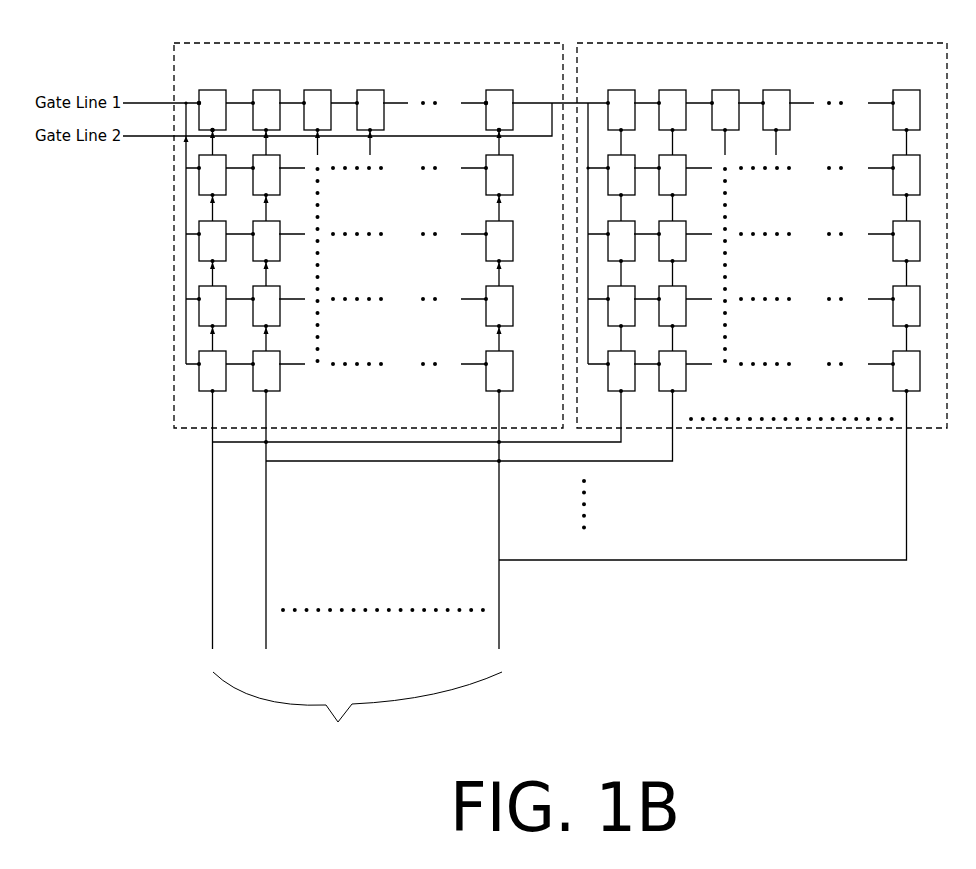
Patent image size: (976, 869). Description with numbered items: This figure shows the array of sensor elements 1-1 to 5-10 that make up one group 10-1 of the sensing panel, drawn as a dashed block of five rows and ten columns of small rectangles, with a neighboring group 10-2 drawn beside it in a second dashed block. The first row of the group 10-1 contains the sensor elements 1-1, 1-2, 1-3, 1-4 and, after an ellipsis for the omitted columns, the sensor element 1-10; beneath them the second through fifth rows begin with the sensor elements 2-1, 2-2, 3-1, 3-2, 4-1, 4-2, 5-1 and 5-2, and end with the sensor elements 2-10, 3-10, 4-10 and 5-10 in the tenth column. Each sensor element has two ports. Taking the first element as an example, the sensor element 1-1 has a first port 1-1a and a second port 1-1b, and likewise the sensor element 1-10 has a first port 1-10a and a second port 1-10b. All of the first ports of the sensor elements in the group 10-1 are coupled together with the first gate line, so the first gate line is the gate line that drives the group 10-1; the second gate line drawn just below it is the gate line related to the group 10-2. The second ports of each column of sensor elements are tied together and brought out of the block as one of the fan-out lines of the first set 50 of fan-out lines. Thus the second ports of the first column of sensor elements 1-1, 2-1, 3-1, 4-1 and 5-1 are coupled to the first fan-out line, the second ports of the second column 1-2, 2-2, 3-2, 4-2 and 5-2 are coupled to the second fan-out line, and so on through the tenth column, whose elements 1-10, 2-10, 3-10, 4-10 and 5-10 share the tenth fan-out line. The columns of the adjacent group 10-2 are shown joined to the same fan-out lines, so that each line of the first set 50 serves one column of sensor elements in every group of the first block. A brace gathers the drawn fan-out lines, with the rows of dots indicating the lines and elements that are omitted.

The group 10-1 is at (440, 43).
The group 10-2 is at (876, 43).
The sensor element 1-1 is at (213, 90).
The sensor element 1-2 is at (266, 90).
The sensor element 1-3 is at (318, 90).
The sensor element 1-4 is at (370, 90).
The sensor element 1-10 is at (499, 90).
The first port 1-1a is at (199, 100).
The second port 1-1b is at (212, 137).
The first port 1-10a is at (486, 100).
The second port 1-10b is at (499, 137).
The sensor element 2-1 is at (213, 155).
The sensor element 2-2 is at (266, 155).
The sensor element 2-10 is at (500, 155).
The sensor element 3-1 is at (213, 221).
The sensor element 3-2 is at (266, 221).
The sensor element 3-10 is at (500, 220).
The sensor element 4-1 is at (213, 286).
The sensor element 4-2 is at (266, 286).
The sensor element 4-10 is at (500, 286).
The sensor element 5-1 is at (213, 351).
The sensor element 5-2 is at (266, 351).
The sensor element 5-10 is at (500, 351).
The first set of fan-out lines 50 is at (504, 568).